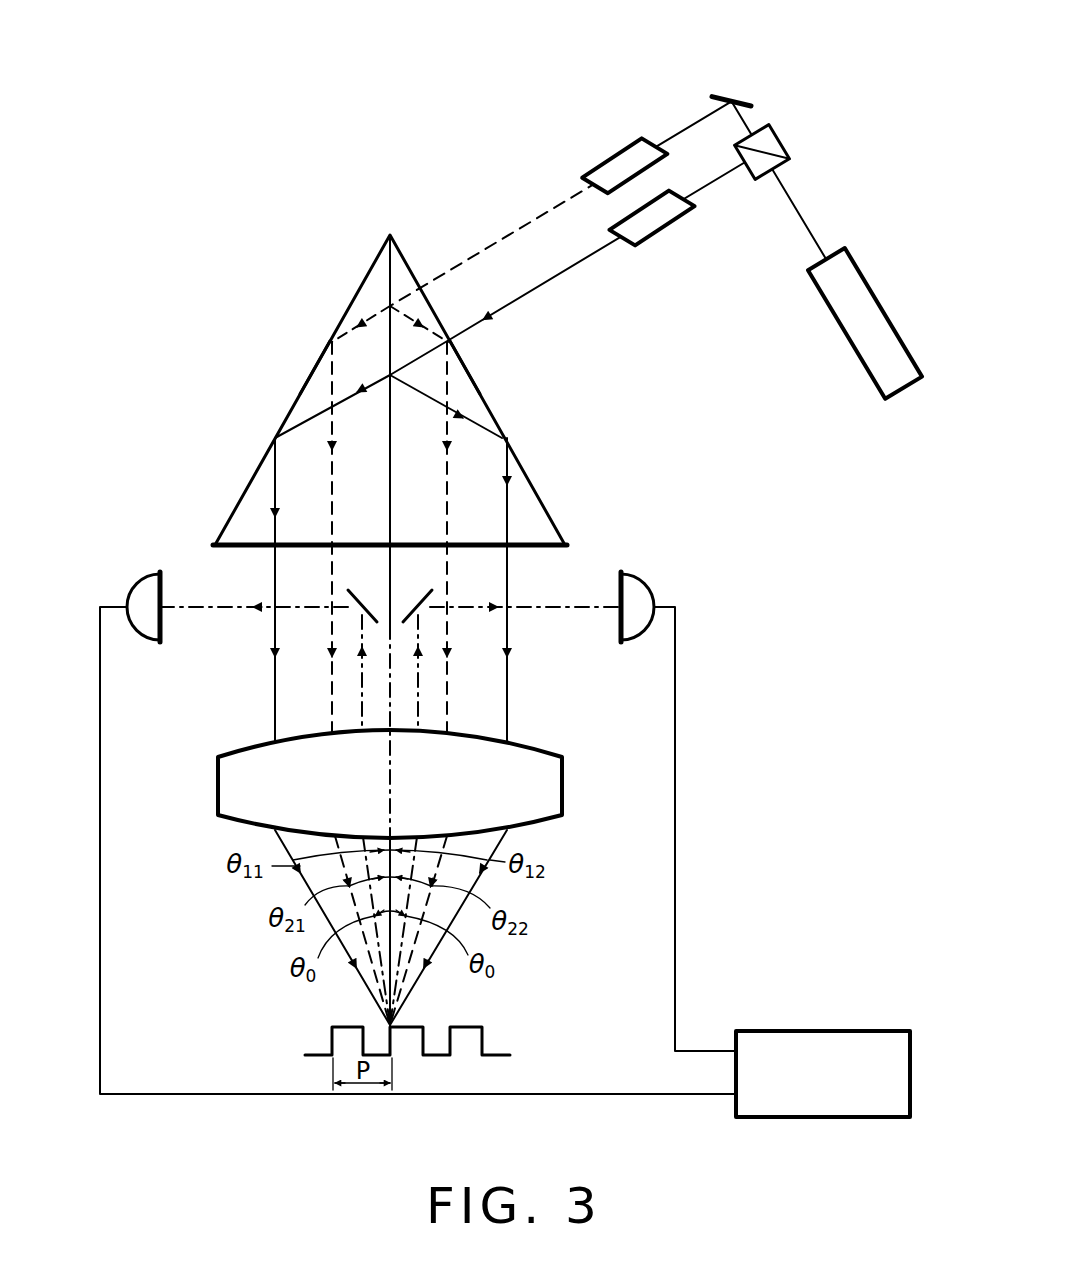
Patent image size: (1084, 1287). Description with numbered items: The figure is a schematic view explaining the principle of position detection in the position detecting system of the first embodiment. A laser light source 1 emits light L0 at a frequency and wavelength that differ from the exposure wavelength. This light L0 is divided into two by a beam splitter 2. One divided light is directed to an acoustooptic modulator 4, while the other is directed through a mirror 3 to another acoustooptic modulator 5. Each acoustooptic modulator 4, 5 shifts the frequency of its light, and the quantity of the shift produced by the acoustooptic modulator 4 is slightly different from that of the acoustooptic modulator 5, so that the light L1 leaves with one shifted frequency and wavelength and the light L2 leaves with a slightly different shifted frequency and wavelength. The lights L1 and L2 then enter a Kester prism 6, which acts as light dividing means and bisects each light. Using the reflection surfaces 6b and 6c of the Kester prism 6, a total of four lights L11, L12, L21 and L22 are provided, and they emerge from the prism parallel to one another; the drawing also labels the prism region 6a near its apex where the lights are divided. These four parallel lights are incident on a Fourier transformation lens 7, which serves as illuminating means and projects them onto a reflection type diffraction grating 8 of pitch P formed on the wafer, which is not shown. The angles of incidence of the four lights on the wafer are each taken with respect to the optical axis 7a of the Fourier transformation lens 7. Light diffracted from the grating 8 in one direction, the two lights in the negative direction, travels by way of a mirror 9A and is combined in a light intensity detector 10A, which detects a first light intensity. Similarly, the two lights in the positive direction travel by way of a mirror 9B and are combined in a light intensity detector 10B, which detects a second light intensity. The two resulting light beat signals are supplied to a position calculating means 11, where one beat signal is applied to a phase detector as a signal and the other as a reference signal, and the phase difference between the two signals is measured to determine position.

The laser light source 1 is at (877, 307).
The beam splitter 2 is at (790, 142).
The mirror 3 is at (740, 97).
The acoustooptic modulator 4 is at (675, 237).
The acoustooptic modulator 5 is at (617, 150).
The Kester prism 6 is at (405, 255).
The prism apex / splitting portion 6a is at (390, 303).
The reflection surface 6b is at (307, 381).
The reflection surface 6c is at (483, 398).
The Fourier transformation lens 7 is at (515, 744).
The optical axis 7a is at (390, 699).
The reflection type diffraction grating 8 is at (432, 1052).
The mirror 9A is at (362, 598).
The mirror 9B is at (418, 598).
The light intensity detector 10A is at (148, 583).
The light intensity detector 10B is at (632, 584).
The position calculating means 11 is at (830, 1031).
The light L0 is at (807, 222).
The light L1 is at (563, 273).
The light L2 is at (507, 237).
The light L11 is at (275, 518).
The light L12 is at (505, 517).
The light L21 is at (332, 492).
The light L22 is at (448, 473).